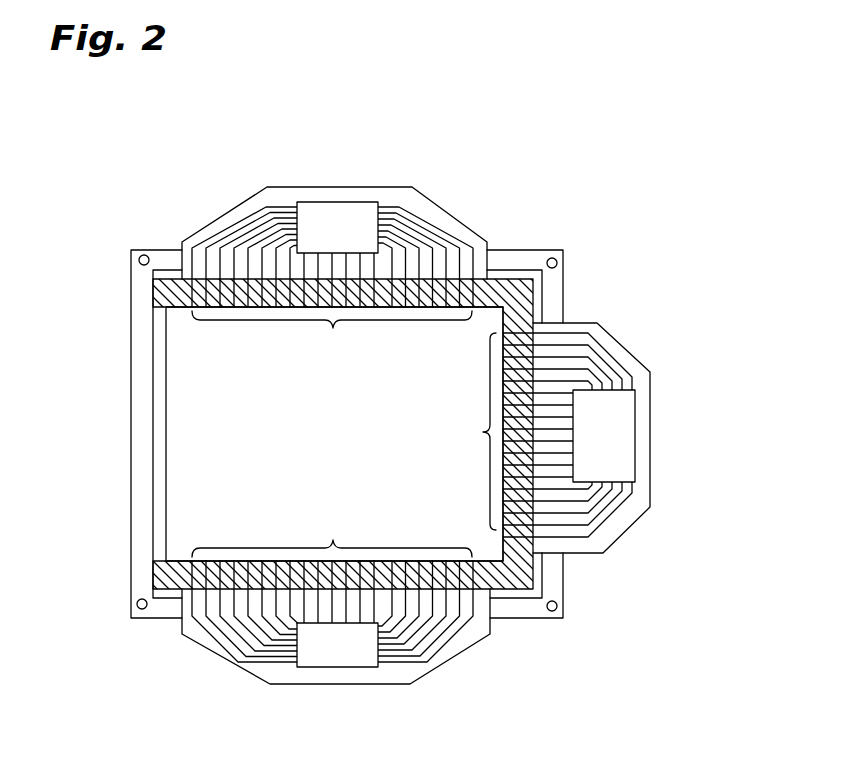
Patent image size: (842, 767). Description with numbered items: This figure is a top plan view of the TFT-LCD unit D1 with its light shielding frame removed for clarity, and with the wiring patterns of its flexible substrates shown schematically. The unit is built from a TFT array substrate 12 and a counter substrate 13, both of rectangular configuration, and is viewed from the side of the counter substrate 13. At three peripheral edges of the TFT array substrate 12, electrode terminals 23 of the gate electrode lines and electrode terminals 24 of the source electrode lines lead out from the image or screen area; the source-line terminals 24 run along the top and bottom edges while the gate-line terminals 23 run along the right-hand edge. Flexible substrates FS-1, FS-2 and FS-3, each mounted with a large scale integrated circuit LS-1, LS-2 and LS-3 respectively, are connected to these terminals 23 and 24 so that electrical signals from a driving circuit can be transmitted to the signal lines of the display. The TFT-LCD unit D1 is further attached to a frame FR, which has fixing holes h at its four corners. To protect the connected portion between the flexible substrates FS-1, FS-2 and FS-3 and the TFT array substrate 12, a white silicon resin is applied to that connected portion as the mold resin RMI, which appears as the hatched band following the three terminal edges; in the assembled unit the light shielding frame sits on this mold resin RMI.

The TFT-LCD unit D1 is at (503, 117).
The frame FR is at (565, 290).
The fixing holes h is at (141, 256).
The TFT array substrate 12 is at (151, 358).
The counter substrate 13 is at (165, 414).
The mold resin RMI is at (522, 618).
The electrode terminals of the source electrode lines 24 is at (332, 434).
The electrode terminals of the gate electrode lines 23 is at (466, 431).
The flexible substrate FS-3 is at (400, 188).
The large scale integrated circuit LS-3 is at (337, 222).
The flexible substrate FS-2 is at (400, 686).
The large scale integrated circuit LS-2 is at (337, 652).
The flexible substrate FS-1 is at (628, 531).
The large scale integrated circuit LS-1 is at (618, 435).